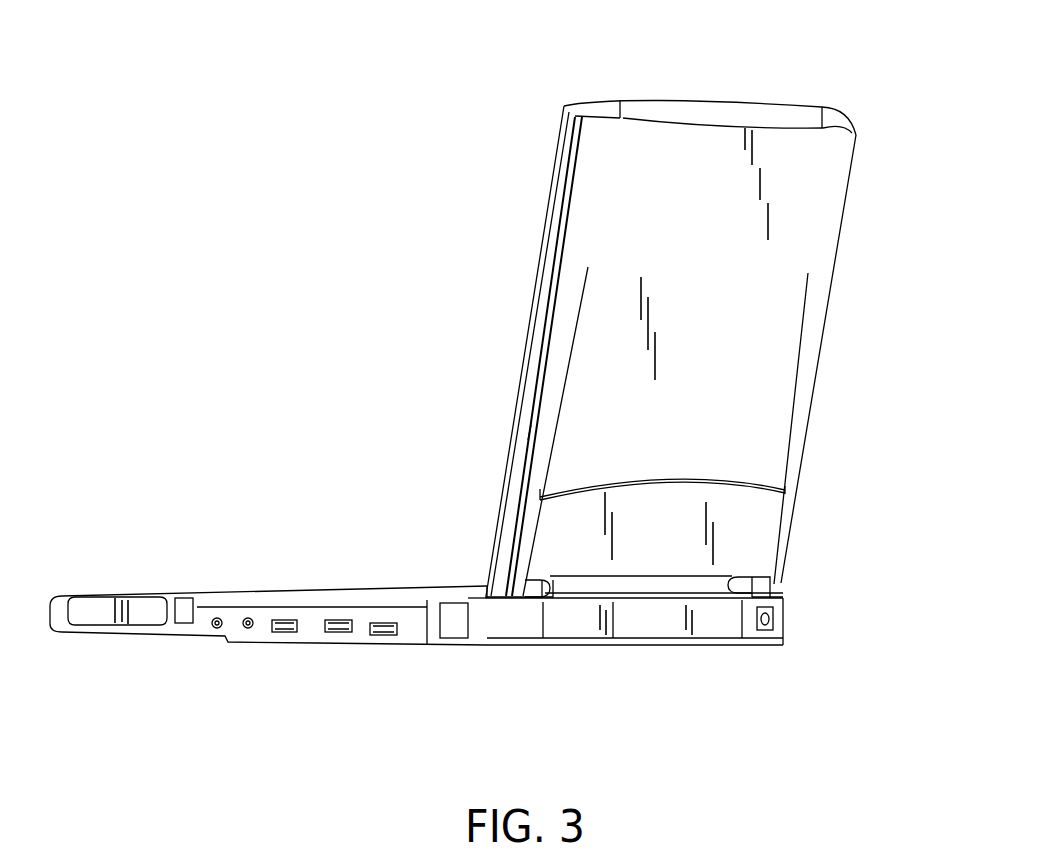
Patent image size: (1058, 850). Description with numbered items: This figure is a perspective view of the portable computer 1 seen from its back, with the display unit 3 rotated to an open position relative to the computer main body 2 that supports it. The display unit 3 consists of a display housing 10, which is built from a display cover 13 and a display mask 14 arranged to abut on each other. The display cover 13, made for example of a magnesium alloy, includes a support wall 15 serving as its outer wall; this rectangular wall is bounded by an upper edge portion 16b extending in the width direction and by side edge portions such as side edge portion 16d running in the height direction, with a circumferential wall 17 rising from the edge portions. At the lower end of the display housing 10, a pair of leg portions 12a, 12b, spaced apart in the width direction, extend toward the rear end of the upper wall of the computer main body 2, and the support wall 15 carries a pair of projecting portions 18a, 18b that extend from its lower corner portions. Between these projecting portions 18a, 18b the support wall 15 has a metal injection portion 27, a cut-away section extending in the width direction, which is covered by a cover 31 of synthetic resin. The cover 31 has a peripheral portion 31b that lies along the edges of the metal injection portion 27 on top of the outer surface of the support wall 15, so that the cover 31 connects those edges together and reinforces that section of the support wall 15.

The portable computer 1 is at (718, 61).
The computer main body 2 is at (140, 634).
The display unit 3 is at (856, 176).
The display housing 10 is at (472, 160).
The display cover 13 is at (588, 250).
The display mask 14 is at (552, 175).
The support wall 15 is at (785, 315).
The upper edge portion 16b is at (597, 98).
The side edge portion 16d is at (537, 370).
The circumferential wall 17 is at (523, 430).
The metal injection portion 27 is at (583, 494).
The cover 31 is at (743, 517).
The peripheral portion 31b is at (673, 497).
The leg portion 12a is at (780, 582).
The leg portion 12b is at (517, 582).
The projecting portion 18a is at (781, 588).
The projecting portion 18b is at (513, 588).